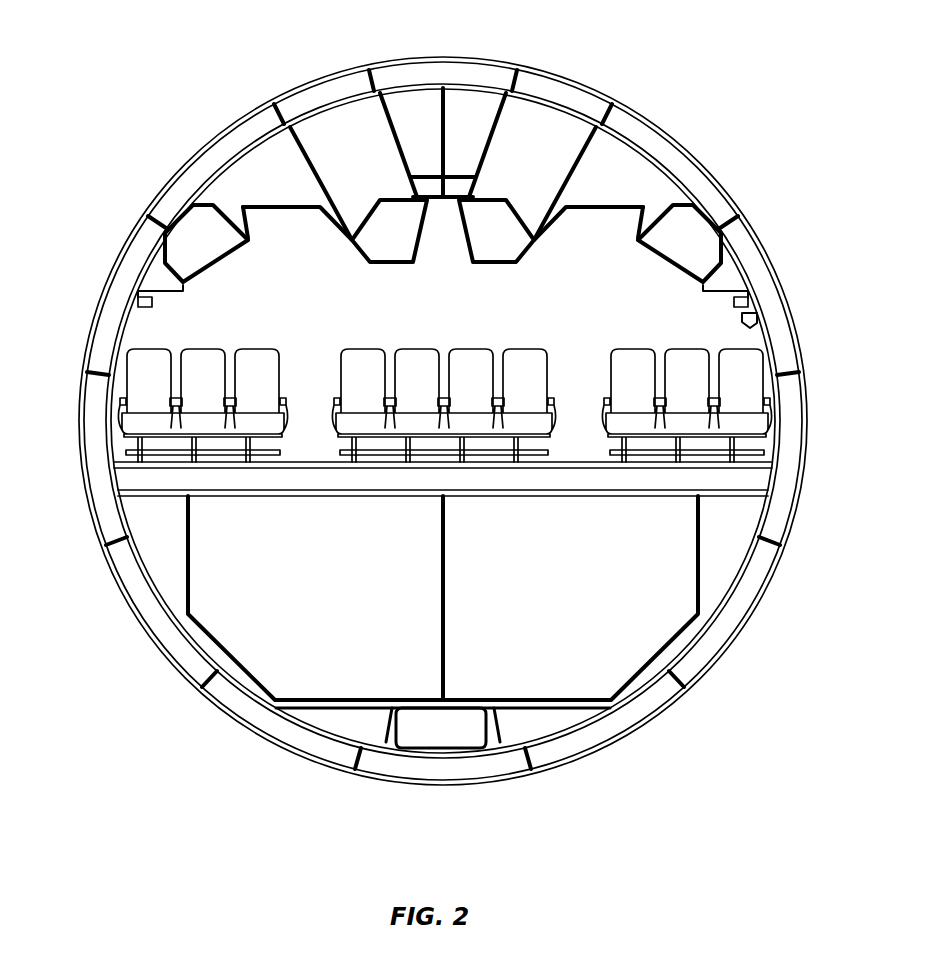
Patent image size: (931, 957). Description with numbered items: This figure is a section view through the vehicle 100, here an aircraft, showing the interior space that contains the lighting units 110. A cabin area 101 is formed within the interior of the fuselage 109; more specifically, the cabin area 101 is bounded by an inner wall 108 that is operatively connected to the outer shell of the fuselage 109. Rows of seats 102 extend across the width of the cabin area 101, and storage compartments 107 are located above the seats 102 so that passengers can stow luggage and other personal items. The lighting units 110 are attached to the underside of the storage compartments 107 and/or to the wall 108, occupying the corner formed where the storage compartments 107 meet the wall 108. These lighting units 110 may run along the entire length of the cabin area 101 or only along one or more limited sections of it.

The vehicle 100 is at (178, 101).
The cabin area 101 is at (198, 301).
The seats 102 is at (200, 362).
The storage compartments 107 is at (190, 243).
The inner wall 108 is at (744, 316).
The fuselage 109 is at (767, 582).
The lighting unit 110 is at (140, 300).